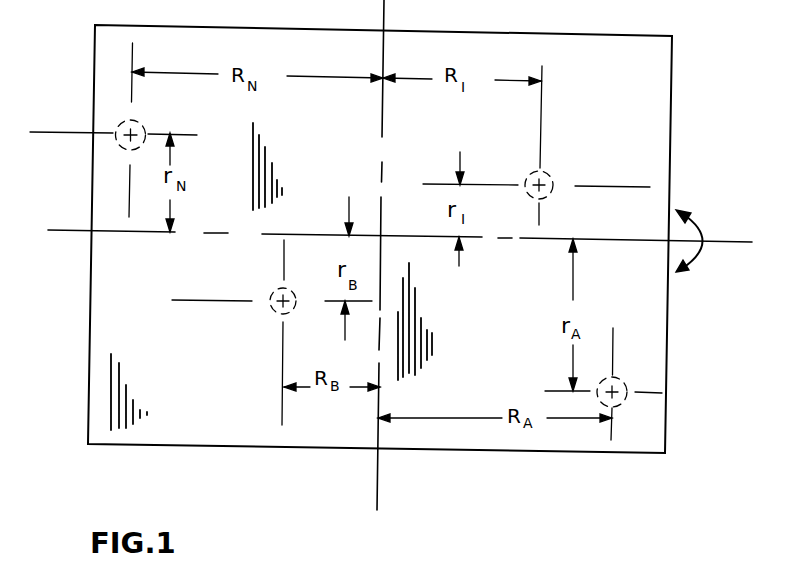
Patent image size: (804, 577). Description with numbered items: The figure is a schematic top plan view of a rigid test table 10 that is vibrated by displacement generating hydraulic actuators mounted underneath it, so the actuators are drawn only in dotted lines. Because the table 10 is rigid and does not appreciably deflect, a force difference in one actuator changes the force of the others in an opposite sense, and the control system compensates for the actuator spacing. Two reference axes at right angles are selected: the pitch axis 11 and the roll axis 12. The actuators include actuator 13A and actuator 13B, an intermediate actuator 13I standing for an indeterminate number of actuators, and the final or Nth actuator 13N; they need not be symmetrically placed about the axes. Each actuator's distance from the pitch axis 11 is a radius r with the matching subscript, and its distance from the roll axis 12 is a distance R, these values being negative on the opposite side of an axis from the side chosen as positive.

The rigid test table 10 is at (670, 133).
The pitch axis 11 is at (707, 242).
The roll axis 12 is at (378, 490).
The actuator 13N is at (142, 123).
The actuator 13I is at (550, 173).
The actuator 13B is at (272, 315).
The actuator 13A is at (626, 382).